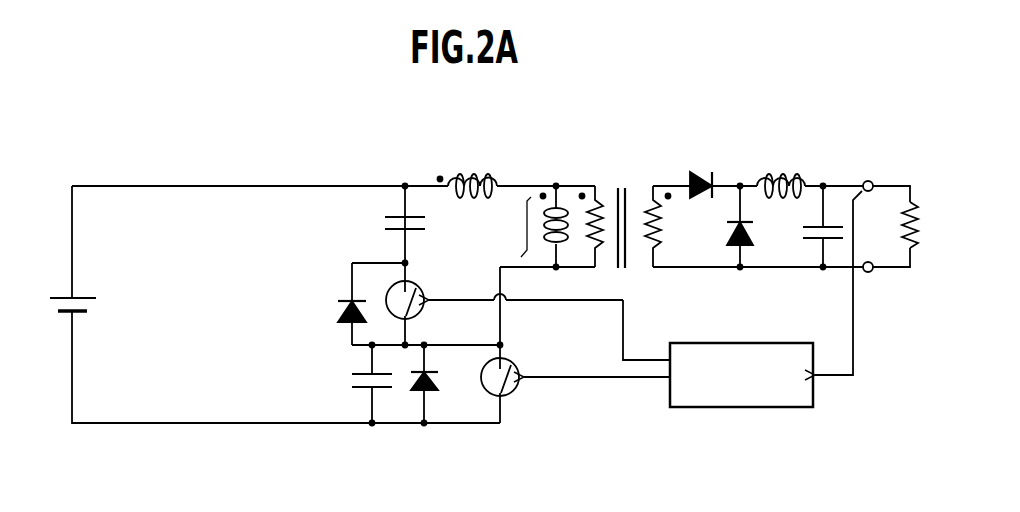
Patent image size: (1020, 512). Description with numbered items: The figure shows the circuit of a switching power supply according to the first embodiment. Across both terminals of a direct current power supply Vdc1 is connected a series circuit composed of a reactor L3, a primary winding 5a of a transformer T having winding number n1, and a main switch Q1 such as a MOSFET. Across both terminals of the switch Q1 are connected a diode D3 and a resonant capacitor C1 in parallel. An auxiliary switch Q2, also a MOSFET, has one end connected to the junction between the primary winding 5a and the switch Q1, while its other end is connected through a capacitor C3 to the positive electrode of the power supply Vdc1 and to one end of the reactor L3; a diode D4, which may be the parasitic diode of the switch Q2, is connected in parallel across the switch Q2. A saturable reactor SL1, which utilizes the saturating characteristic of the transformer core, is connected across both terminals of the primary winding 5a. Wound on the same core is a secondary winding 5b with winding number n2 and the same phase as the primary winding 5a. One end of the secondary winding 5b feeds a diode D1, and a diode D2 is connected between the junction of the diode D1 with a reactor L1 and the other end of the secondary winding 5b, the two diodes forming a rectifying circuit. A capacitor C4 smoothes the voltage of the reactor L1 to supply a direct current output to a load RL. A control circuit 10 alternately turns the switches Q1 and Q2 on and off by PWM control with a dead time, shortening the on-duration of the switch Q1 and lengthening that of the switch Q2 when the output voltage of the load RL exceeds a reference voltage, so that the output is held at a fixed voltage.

The primary winding 5a is at (578, 207).
The secondary winding 5b is at (666, 247).
The control circuit 10 is at (730, 407).
The direct current power supply Vdc1 is at (57, 288).
The resonant capacitor C1 is at (356, 385).
The capacitor C3 is at (388, 226).
The capacitor C4 is at (807, 237).
The diode D1 is at (699, 175).
The diode D2 is at (726, 235).
The diode D3 is at (441, 384).
The diode D4 is at (334, 314).
The switch Q1 is at (575, 390).
The switch Q2 is at (504, 296).
The reactor L1 is at (781, 173).
The reactor L3 is at (468, 171).
The saturable reactor SL1 is at (525, 226).
The transformer T is at (618, 217).
The winding number n1 is at (591, 216).
The winding number n2 is at (657, 216).
The load RL is at (896, 225).